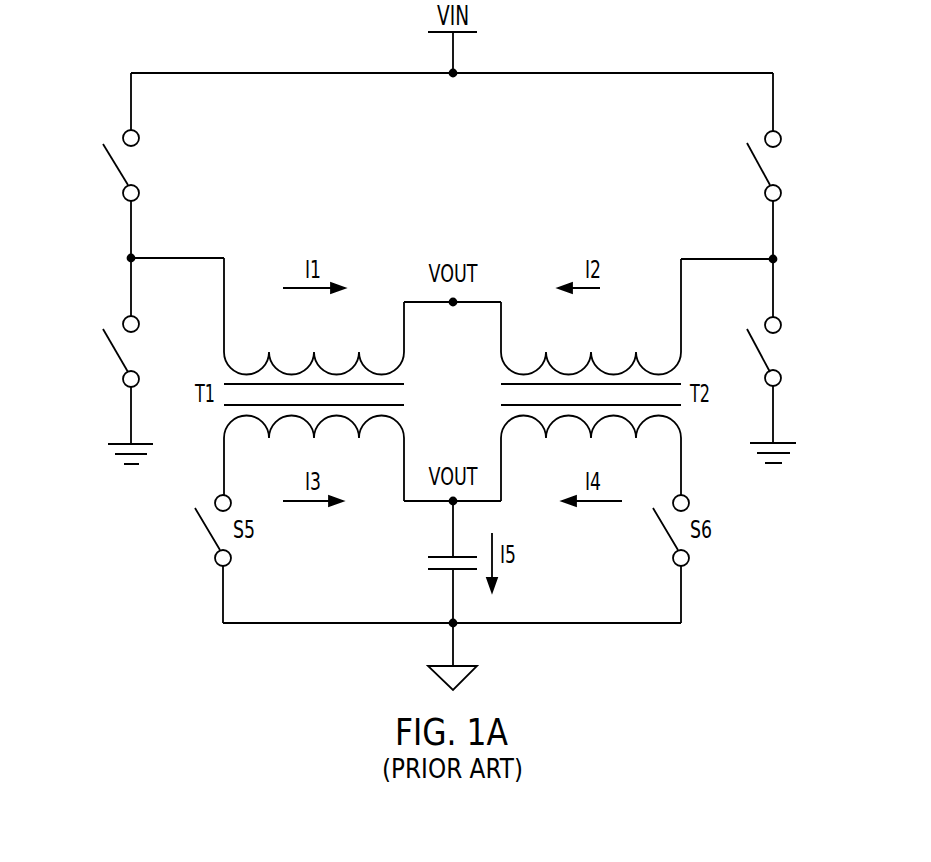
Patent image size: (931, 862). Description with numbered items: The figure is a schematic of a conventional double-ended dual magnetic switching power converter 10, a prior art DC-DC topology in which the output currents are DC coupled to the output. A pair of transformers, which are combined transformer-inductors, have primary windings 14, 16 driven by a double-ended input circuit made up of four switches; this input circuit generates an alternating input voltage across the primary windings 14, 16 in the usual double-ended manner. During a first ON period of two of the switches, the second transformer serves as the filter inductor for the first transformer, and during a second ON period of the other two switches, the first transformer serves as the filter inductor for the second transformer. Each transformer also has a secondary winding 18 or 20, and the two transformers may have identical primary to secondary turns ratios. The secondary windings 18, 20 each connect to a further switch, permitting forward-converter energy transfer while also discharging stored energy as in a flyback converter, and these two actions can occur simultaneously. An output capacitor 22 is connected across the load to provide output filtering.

The double-ended dual magnetic SPC 10 is at (717, 37).
The primary winding 14 is at (224, 303).
The primary winding 16 is at (681, 303).
The secondary winding 18 is at (223, 468).
The secondary winding 20 is at (683, 466).
The output capacitor 22 is at (440, 572).